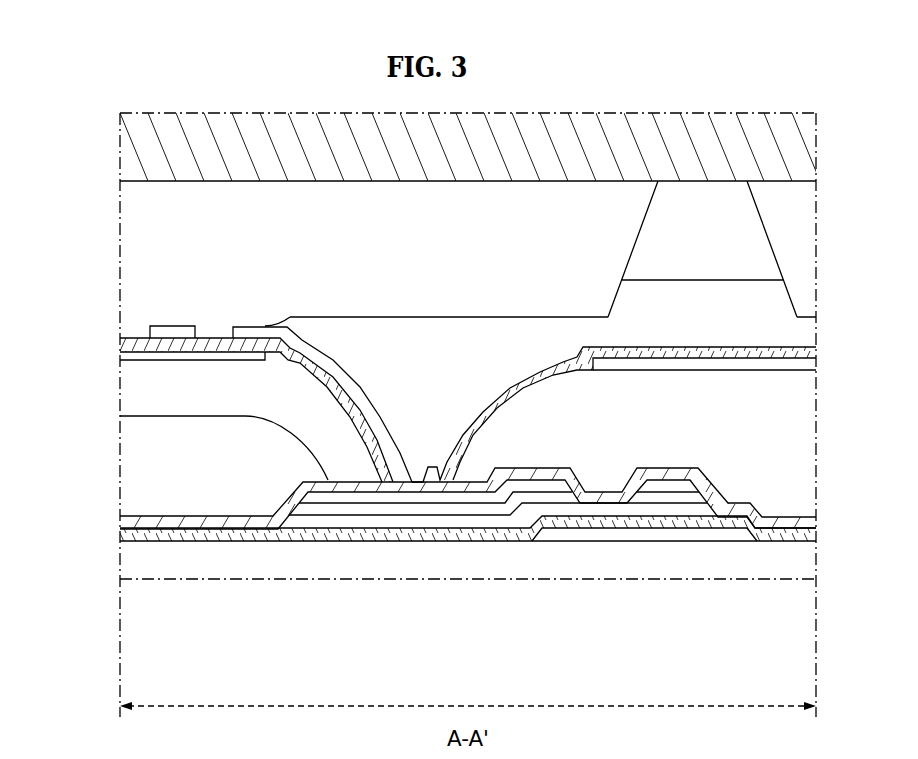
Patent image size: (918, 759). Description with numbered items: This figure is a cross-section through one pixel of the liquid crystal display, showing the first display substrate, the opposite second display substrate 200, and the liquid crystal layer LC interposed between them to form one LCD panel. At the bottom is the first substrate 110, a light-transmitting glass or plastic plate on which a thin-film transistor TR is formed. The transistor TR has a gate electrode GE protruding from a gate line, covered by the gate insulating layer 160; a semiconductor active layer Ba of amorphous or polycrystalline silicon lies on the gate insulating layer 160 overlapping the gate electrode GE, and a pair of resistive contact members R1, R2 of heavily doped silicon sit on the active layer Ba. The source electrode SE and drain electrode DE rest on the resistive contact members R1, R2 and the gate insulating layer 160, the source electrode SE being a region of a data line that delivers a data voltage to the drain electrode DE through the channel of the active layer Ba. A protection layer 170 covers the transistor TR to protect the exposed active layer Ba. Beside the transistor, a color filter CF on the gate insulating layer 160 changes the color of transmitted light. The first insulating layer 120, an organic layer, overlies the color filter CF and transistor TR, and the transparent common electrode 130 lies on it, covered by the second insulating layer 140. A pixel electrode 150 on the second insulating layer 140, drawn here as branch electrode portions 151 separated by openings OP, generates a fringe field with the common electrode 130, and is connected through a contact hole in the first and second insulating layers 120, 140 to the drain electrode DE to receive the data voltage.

The second display substrate 200 is at (135, 147).
The liquid crystal layer LC is at (132, 218).
The pixel electrode 150 is at (220, 371).
The opening OP is at (218, 330).
The branch electrode 151 is at (172, 328).
The second insulating layer 140 is at (135, 345).
The common electrode 130 is at (120, 357).
The first insulating layer 120 is at (133, 397).
The color filter CF is at (133, 470).
The protection layer 170 is at (160, 516).
The gate insulating layer 160 is at (120, 534).
The first substrate 110 is at (123, 563).
The drain electrode DE is at (500, 490).
The resistive contact member R1 is at (541, 498).
The gate electrode GE is at (598, 537).
The source electrode SE is at (658, 482).
The resistive contact member R2 is at (675, 500).
The semiconductor active layer Ba is at (702, 512).
The thin-film transistor TR is at (732, 633).